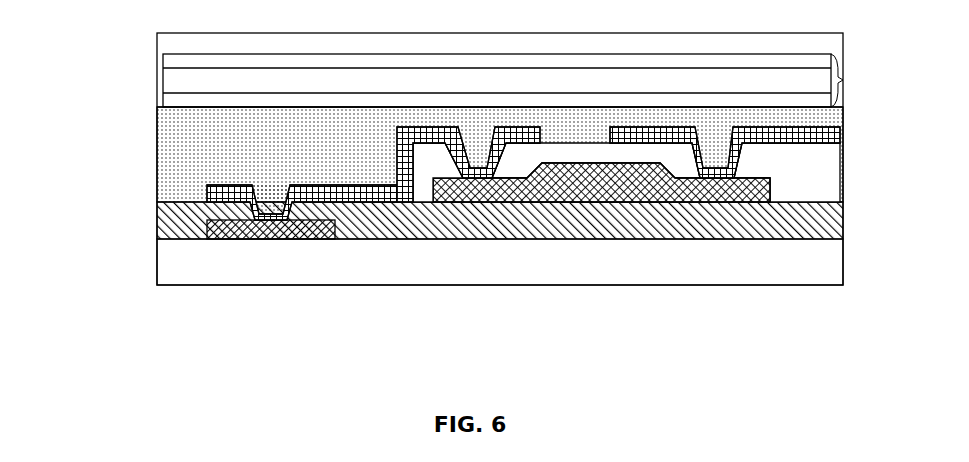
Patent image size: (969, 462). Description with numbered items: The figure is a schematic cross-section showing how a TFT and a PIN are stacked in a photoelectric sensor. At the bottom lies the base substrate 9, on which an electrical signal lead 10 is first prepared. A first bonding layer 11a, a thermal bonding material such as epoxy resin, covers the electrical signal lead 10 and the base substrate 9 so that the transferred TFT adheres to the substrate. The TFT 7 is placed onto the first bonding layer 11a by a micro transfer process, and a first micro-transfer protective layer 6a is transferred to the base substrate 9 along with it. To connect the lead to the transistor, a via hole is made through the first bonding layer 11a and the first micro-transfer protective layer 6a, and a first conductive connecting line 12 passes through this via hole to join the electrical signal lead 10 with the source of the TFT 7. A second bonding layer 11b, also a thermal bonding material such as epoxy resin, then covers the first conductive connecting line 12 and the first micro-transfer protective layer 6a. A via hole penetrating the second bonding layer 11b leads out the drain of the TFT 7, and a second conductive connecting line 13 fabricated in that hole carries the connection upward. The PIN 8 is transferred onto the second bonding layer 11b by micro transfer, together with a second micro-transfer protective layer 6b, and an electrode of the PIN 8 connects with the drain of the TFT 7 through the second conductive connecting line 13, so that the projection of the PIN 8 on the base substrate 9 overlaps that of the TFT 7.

The first micro-transfer protective layer 6a is at (428, 173).
The second micro-transfer protective layer 6b is at (173, 48).
The TFT 7 is at (583, 193).
The PIN 8 is at (847, 80).
The base substrate 9 is at (485, 285).
The electrical signal lead 10 is at (297, 230).
The first bonding layer 11a is at (165, 230).
The second bonding layer 11b is at (180, 147).
The first conductive connecting line 12 is at (205, 192).
The second conductive connecting line 13 is at (753, 132).